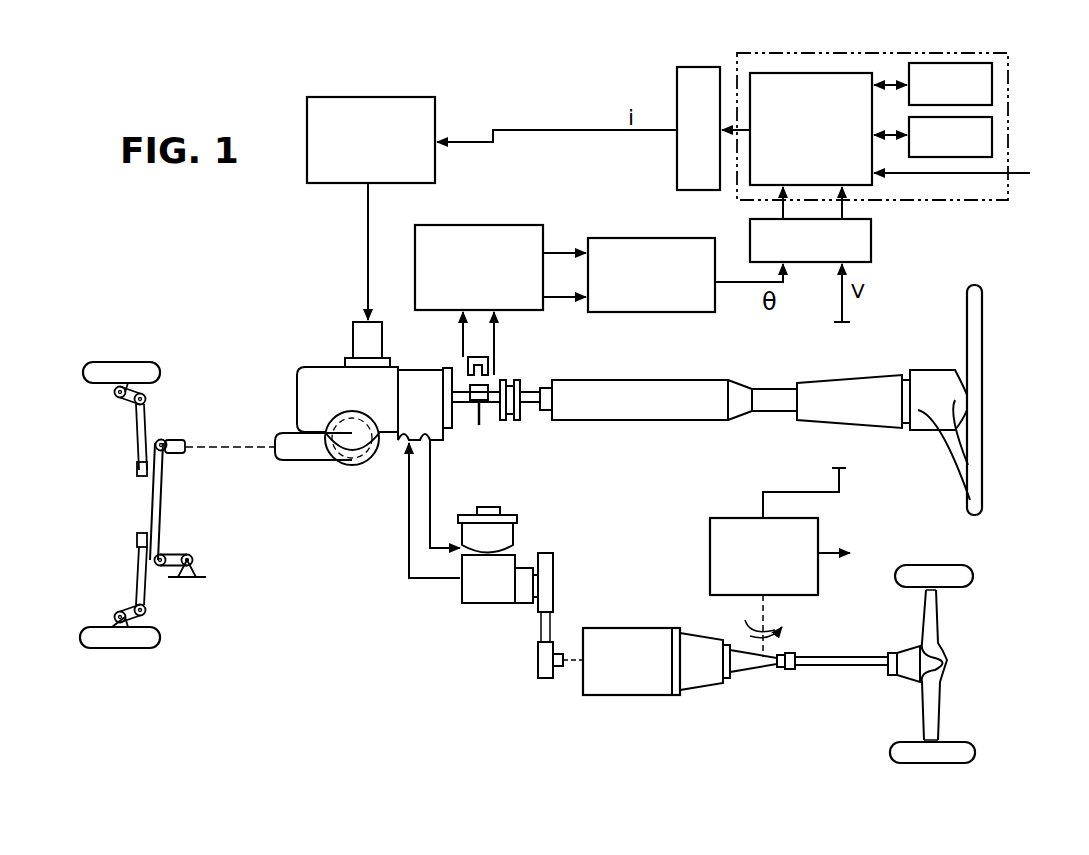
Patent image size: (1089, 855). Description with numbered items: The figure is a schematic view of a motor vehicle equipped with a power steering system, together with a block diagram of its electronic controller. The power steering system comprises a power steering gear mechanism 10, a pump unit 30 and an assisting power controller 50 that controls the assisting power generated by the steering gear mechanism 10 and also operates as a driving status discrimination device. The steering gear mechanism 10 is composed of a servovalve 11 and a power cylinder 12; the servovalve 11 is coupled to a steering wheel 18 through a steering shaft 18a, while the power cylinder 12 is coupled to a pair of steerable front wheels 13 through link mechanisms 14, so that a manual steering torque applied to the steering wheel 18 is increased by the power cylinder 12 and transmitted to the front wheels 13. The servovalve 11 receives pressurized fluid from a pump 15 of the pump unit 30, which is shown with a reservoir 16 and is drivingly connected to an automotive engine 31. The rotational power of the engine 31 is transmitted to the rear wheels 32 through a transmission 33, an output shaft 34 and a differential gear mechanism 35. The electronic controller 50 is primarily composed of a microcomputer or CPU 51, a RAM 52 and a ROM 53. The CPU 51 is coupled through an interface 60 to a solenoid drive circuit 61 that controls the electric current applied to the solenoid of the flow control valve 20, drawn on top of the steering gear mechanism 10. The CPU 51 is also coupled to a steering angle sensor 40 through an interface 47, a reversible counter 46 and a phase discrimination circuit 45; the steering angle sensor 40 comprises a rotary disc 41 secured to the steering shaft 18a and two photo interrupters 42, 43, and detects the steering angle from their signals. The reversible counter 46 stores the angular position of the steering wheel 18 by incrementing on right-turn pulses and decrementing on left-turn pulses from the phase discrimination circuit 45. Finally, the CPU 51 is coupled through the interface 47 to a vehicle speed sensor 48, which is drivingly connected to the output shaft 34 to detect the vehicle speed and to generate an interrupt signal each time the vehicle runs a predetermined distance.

The power steering gear mechanism 10 is at (286, 360).
The servovalve 11 is at (418, 418).
The power cylinder 12 is at (300, 393).
The steerable front wheels 13 is at (113, 362).
The link mechanisms 14 is at (130, 463).
The pump 15 is at (495, 605).
The oil reservoir 16 is at (500, 536).
The steering wheel 18 is at (978, 395).
The steering shaft 18a is at (545, 388).
The flow control valve 20 is at (356, 330).
The pump unit 30 is at (484, 559).
The automotive engine 31 is at (630, 690).
The rear wheels 32 is at (963, 578).
The transmission 33 is at (710, 675).
The output shaft 34 is at (826, 665).
The differential gear mechanism 35 is at (935, 666).
The steering angle sensor 40 is at (522, 417).
The rotary disc 41 is at (483, 418).
The photo interrupter 42 is at (470, 360).
The photo interrupter 43 is at (471, 405).
The phase discrimination circuit 45 is at (516, 225).
The reversible counter 46 is at (630, 238).
The interface 47 is at (871, 240).
The vehicle speed sensor 48 is at (716, 518).
The assisting power controller 50 is at (862, 53).
The microcomputer (CPU) 51 is at (775, 73).
The random access memory (RAM) 52 is at (992, 126).
The read-only memory (ROM) 53 is at (992, 80).
The interface 60 is at (697, 67).
The solenoid drive circuit 61 is at (417, 97).